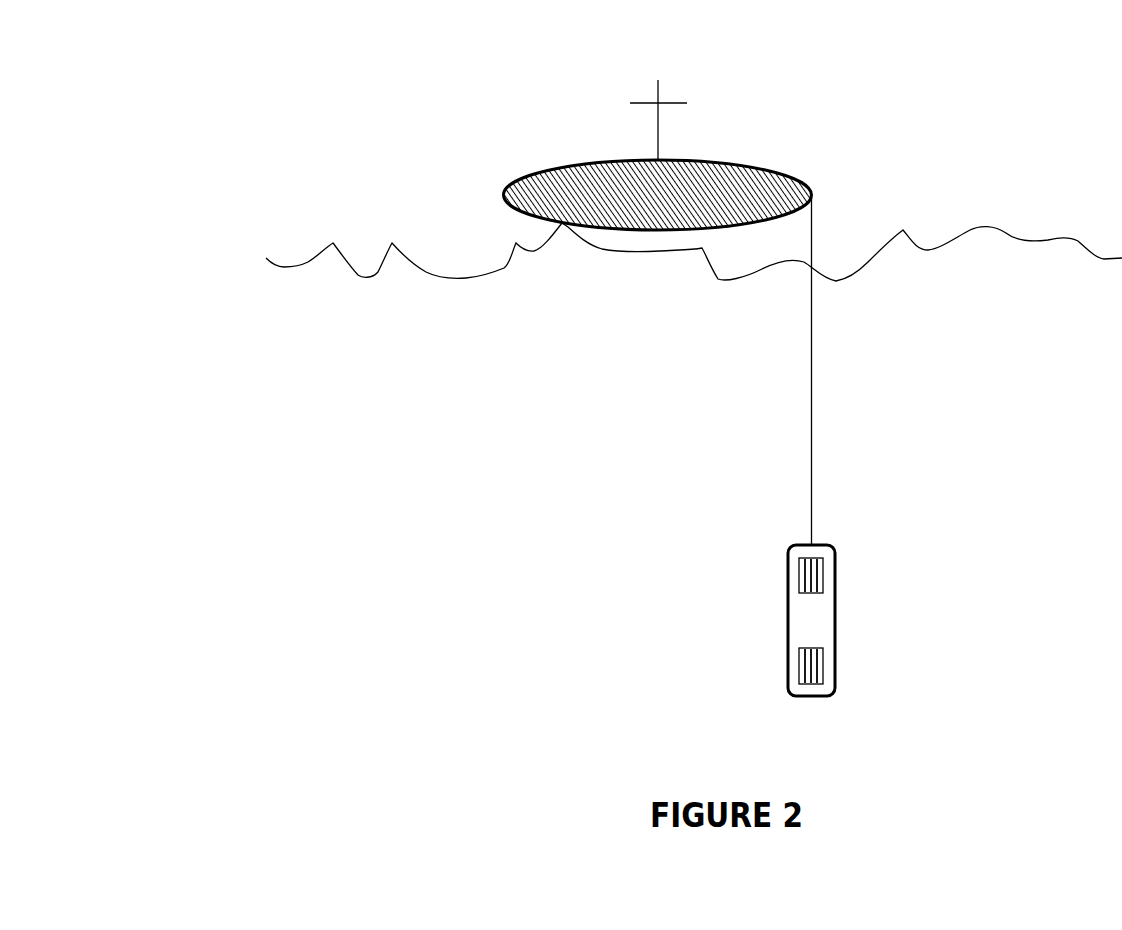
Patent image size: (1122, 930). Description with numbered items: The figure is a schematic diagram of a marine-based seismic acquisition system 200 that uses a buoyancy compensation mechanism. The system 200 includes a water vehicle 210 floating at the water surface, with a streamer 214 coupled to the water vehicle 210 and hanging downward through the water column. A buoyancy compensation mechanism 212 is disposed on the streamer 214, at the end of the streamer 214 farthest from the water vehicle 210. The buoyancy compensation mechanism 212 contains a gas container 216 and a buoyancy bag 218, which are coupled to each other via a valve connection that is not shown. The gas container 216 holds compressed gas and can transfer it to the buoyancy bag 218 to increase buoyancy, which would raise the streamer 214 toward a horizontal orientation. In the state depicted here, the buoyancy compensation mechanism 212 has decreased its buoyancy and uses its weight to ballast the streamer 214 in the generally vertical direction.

The marine-based seismic acquisition system 200 is at (193, 48).
The water vehicle 210 is at (480, 170).
The buoyancy compensation mechanism 212 is at (773, 614).
The streamer 214 is at (773, 423).
The gas container 216 is at (827, 661).
The buoyancy bag 218 is at (827, 570).